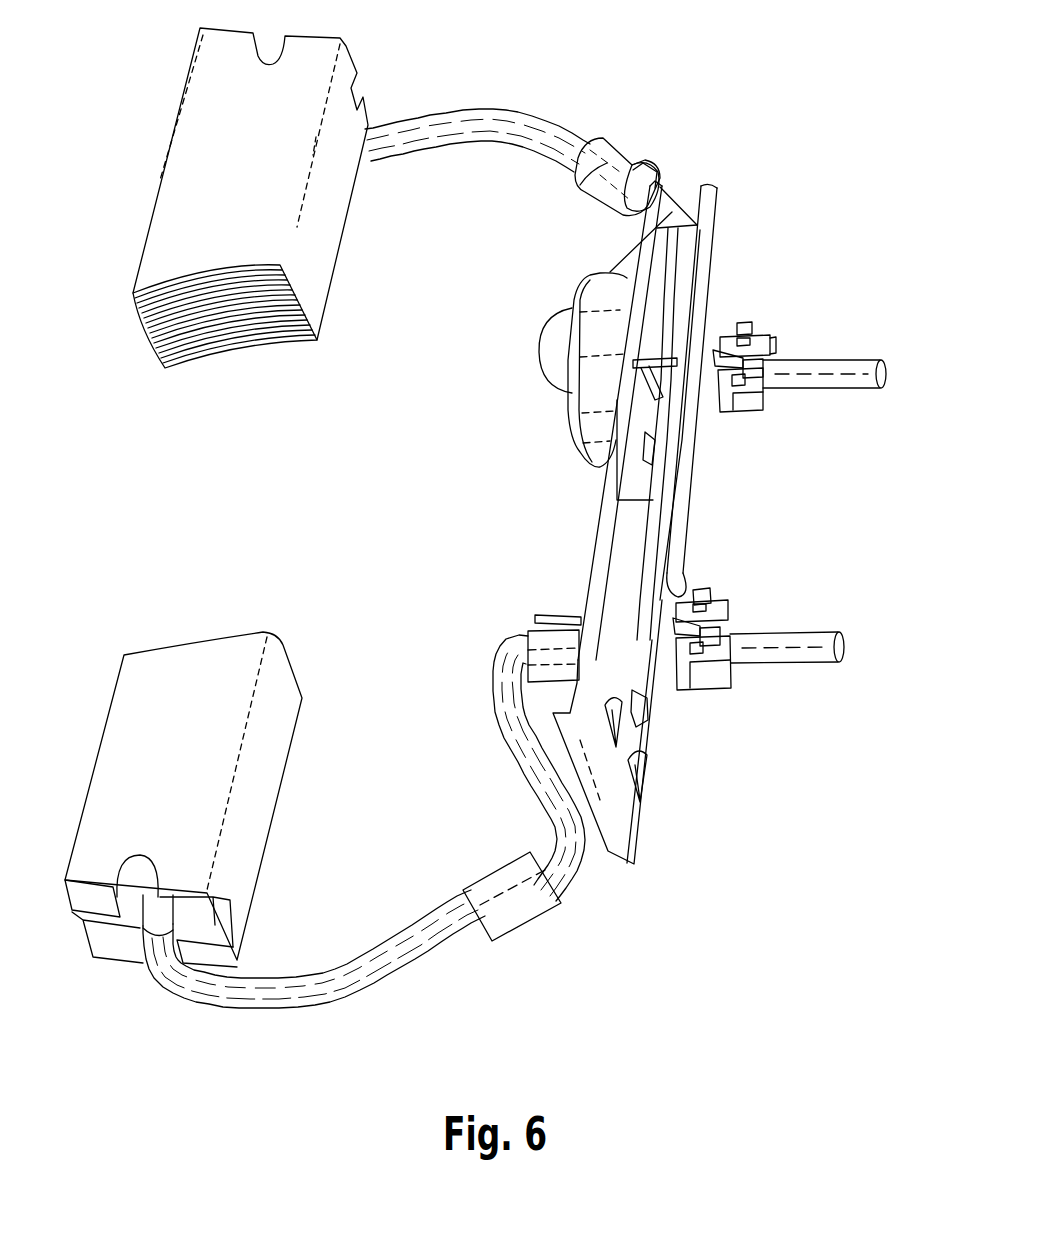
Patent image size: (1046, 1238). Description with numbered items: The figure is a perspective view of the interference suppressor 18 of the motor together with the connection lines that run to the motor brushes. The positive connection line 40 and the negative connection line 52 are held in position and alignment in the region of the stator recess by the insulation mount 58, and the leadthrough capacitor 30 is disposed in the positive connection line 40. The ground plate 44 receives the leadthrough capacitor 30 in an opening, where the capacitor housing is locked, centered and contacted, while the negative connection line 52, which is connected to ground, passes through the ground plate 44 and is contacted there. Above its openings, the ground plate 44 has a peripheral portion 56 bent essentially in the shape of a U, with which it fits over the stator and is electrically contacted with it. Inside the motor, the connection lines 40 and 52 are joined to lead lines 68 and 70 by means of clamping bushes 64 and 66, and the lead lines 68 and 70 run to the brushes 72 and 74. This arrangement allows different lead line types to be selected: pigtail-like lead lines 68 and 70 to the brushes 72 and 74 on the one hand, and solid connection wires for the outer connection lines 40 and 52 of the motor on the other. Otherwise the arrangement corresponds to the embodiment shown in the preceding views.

The interference suppressor 18 is at (755, 208).
The leadthrough capacitor 30 is at (608, 297).
The positive connection line 40 is at (843, 368).
The ground plate 44 is at (657, 753).
The negative connection line 52 is at (808, 648).
The peripheral portion 56 is at (617, 567).
The insulation mount 58 is at (742, 425).
The clamping bush 64 is at (577, 192).
The clamping bush 66 is at (507, 893).
The lead line 68 is at (437, 128).
The lead line 70 is at (270, 990).
The brush 72 is at (227, 170).
The brush 74 is at (157, 750).